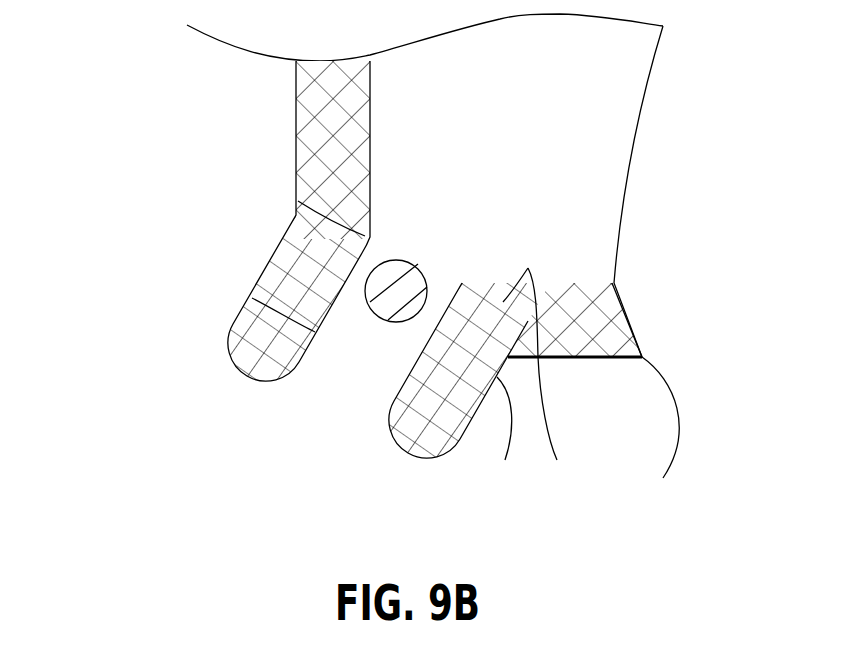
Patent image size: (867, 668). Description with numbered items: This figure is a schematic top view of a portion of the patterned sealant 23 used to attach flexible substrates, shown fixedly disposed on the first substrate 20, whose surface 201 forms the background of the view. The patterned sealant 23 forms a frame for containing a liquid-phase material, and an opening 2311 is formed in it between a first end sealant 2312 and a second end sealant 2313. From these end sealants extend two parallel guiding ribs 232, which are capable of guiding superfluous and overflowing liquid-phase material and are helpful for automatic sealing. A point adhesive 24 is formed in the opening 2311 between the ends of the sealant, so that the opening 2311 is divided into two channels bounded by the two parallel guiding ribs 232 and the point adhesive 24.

The first substrate 20 is at (187, 398).
The side surface of base body 201 is at (598, 145).
The patterned sealant 23 is at (333, 123).
The opening 2311 is at (463, 237).
The first end sealant 2312 is at (313, 188).
The second end sealant 2313 is at (557, 460).
The guiding rib 232 is at (267, 265).
The point adhesive 24 is at (387, 317).